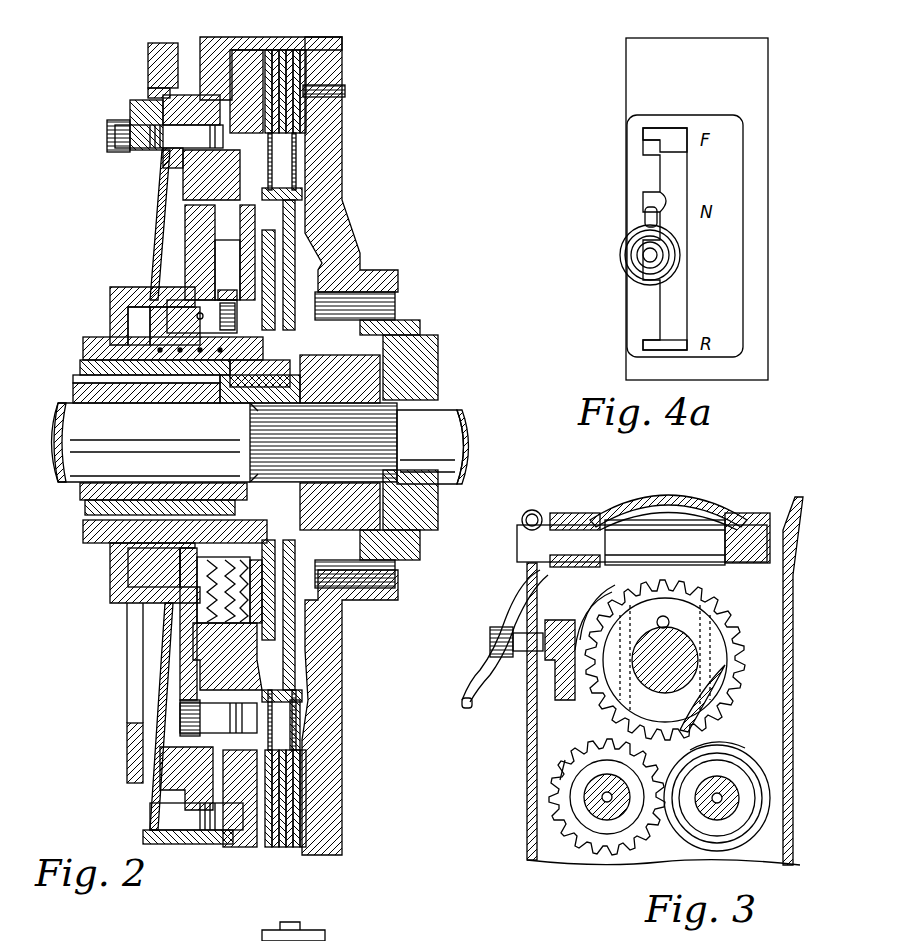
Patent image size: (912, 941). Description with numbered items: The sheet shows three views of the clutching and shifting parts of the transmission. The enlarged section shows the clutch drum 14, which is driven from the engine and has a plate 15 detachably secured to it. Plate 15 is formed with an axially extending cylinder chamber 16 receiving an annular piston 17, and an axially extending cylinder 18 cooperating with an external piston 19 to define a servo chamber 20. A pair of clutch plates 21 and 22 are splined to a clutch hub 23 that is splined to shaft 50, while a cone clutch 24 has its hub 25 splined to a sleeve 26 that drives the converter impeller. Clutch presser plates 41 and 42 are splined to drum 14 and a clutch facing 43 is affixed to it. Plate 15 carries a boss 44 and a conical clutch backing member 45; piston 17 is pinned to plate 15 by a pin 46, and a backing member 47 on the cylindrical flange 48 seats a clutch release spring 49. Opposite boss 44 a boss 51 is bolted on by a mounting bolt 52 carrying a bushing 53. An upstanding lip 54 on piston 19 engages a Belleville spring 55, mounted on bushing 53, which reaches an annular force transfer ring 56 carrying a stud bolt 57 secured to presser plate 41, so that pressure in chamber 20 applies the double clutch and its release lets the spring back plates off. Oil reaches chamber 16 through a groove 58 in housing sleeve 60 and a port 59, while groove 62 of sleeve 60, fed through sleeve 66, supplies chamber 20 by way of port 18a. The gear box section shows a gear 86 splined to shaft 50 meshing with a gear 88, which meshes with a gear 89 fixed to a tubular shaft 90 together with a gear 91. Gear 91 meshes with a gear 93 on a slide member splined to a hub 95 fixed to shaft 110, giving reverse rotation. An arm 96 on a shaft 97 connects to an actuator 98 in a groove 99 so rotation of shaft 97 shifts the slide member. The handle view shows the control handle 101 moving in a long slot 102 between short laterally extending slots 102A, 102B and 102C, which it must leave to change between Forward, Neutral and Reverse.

In FIG. 2, the clutch drum 14 is at (338, 200).
In FIG. 2, the plate 15 is at (205, 40).
In FIG. 2, the cylinder chamber 16 is at (202, 316).
In FIG. 2, the annular piston 17 is at (190, 245).
In FIG. 2, the axially extending cylinder 18 is at (110, 588).
In FIG. 2, the port 18a is at (154, 567).
In FIG. 2, the external piston 19 is at (110, 291).
In FIG. 2, the servo chamber 20 is at (128, 320).
In FIG. 2, the clutch plate 21 is at (270, 50).
In FIG. 2, the clutch plate 22 is at (300, 50).
In FIG. 2, the clutch hub 23 is at (370, 408).
In FIG. 2, the cone clutch 24 is at (227, 270).
In FIG. 2, the hub 25 is at (245, 403).
In FIG. 2, the sleeve 26 is at (100, 400).
In FIG. 2, the clutch presser plate 41 is at (245, 52).
In FIG. 2, the clutch presser plate 42 is at (288, 50).
In FIG. 2, the clutch facing 43 is at (335, 88).
In FIG. 2, the boss 44 is at (163, 102).
In FIG. 2, the conical clutch backing member 45 is at (240, 190).
In FIG. 2, the pin 46 is at (225, 284).
In FIG. 2, the backing member 47 is at (221, 316).
In FIG. 2, the cylindrical flange 48 is at (305, 442).
In FIG. 2, the clutch release spring 49 is at (205, 575).
In FIG. 2, the shaft 50 is at (452, 415).
In FIG. 2, the boss 51 is at (130, 115).
In FIG. 2, the mounting bolt 52 is at (110, 140).
In FIG. 2, the bushing 53 is at (140, 150).
In FIG. 2, the upstanding lip 54 is at (158, 630).
In FIG. 2, the Belleville spring 55 is at (160, 200).
In FIG. 2, the annular force transfer ring 56 is at (158, 44).
In FIG. 2, the stud bolt 57 is at (188, 832).
In FIG. 2, the groove 58 is at (230, 385).
In FIG. 2, the port 59 is at (190, 342).
In FIG. 2, the housing sleeve 60 is at (83, 348).
In FIG. 2, the groove 62 is at (145, 380).
In FIG. 2, the sleeve 66 is at (80, 368).
In FIG. 3, the gear 86 is at (745, 692).
In FIG. 3, the gear 88 is at (660, 825).
In FIG. 3, the gear 89 is at (615, 855).
In FIG. 3, the tubular shaft 90 is at (585, 805).
In FIG. 3, the gear 91 is at (580, 845).
In FIG. 3, the gear 93 is at (600, 725).
In FIG. 3, the hub 95 is at (665, 660).
In FIG. 3, the arm 96 is at (512, 668).
In FIG. 3, the shaft 97 is at (575, 530).
In FIG. 3, the actuator 98 is at (560, 667).
In FIG. 3, the groove 99 is at (600, 612).
In FIG. 3, the shaft 110 is at (728, 752).
In FIG. 4A, the control handle 101 is at (645, 222).
In FIG. 4A, the slot 102 is at (690, 230).
In FIG. 4A, the short laterally extending slot 102A is at (650, 140).
In FIG. 4A, the short laterally extending slot 102B is at (655, 205).
In FIG. 4A, the short laterally extending slot 102C is at (650, 345).